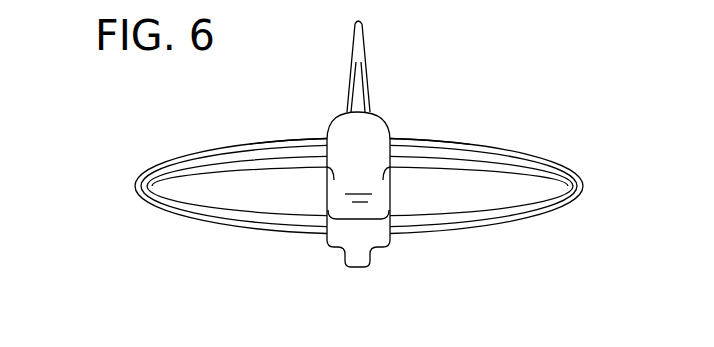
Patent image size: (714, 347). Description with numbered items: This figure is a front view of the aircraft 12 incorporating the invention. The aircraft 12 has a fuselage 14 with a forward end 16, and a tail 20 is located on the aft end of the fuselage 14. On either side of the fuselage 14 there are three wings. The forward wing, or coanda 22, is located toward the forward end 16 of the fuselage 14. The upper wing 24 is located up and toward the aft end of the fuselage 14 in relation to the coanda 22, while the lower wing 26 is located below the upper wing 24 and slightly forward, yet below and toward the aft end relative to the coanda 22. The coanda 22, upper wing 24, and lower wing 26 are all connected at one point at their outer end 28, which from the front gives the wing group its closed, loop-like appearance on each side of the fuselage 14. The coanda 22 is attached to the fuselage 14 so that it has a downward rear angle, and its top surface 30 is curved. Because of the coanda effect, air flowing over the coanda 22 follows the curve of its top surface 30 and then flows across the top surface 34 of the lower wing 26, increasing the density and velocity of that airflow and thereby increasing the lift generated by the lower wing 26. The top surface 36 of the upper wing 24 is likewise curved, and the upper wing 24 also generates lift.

The aircraft 12 is at (556, 77).
The fuselage 14 is at (340, 236).
The forward end 16 is at (367, 221).
The tail 20 is at (366, 44).
The coanda 22 is at (168, 210).
The upper wing 24 is at (213, 224).
The lower wing 26 is at (172, 145).
The outer end 28 is at (143, 184).
The top surface of the coanda 30 is at (241, 147).
The top surface of the lower wing 34 is at (280, 214).
The top surface of the upper wing 36 is at (285, 138).